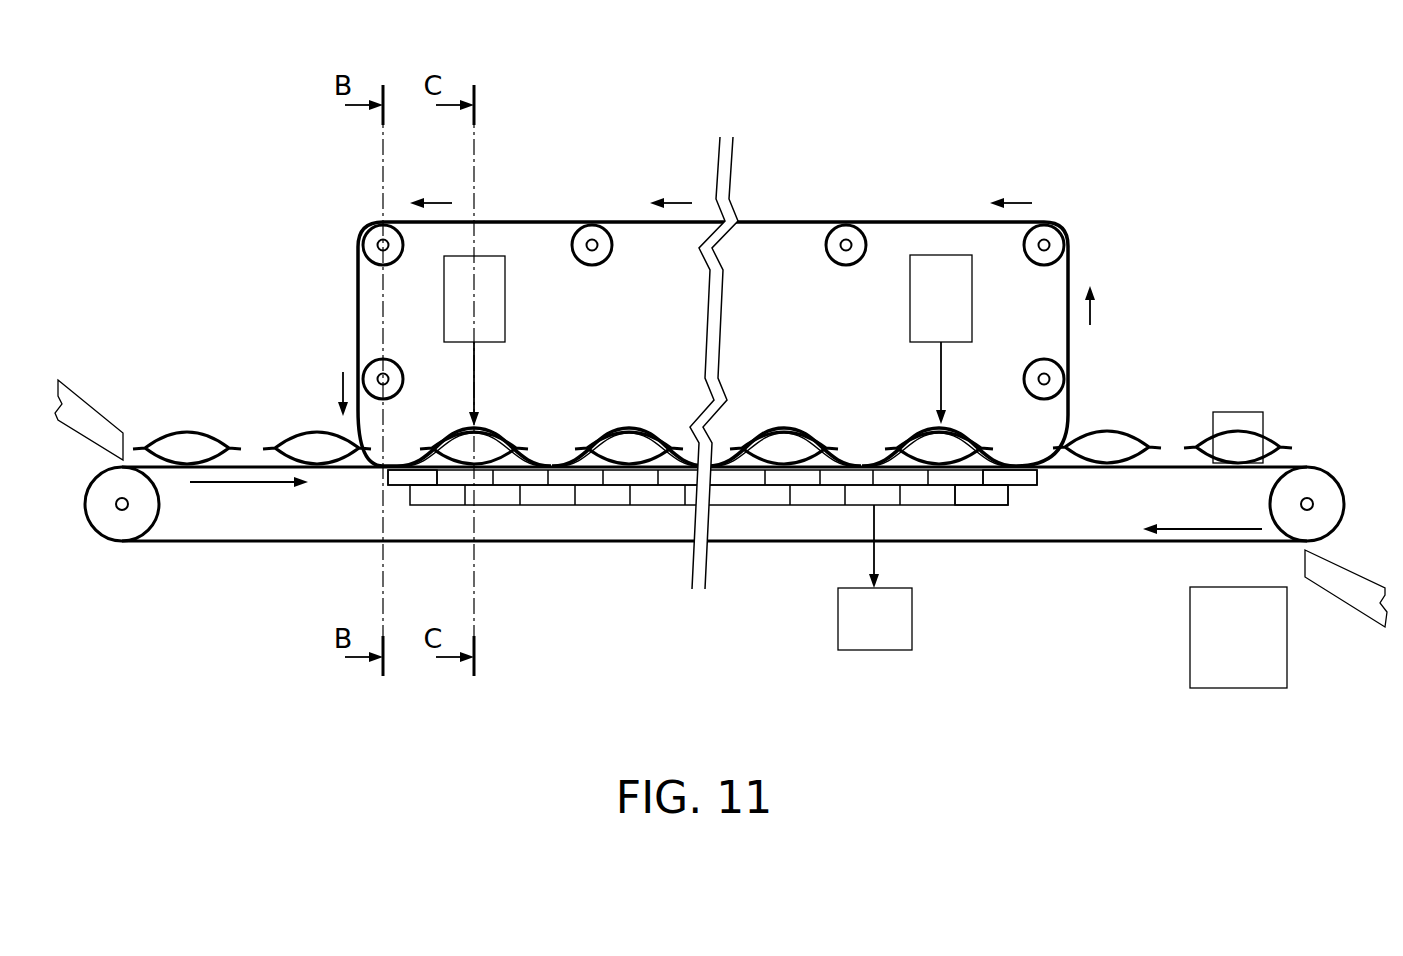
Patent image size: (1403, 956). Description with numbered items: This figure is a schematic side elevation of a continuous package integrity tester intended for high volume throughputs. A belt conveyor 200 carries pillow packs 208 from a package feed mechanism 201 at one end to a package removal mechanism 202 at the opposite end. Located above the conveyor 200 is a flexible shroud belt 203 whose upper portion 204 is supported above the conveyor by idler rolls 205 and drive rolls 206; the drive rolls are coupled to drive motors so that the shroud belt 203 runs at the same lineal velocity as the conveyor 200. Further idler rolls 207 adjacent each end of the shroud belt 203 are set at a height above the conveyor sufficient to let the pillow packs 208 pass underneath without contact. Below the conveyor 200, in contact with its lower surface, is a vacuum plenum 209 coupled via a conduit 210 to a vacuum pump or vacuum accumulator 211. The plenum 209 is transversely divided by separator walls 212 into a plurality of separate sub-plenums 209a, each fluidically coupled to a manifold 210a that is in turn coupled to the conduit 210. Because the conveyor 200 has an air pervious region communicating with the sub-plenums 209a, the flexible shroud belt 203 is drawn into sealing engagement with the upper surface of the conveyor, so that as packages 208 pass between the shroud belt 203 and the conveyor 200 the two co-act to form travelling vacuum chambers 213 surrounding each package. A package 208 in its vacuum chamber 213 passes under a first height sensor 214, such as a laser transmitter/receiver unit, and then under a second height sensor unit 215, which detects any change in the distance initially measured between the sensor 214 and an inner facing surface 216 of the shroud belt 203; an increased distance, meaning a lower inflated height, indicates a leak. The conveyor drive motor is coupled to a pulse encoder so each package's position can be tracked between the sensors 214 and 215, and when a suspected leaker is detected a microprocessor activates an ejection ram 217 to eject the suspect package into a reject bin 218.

The belt conveyor 200 is at (246, 466).
The package feed mechanism 201 is at (78, 410).
The package removal mechanism 202 is at (1335, 590).
The flexible shroud belt 203 is at (520, 438).
The upper portion 204 is at (548, 221).
The idler rolls 205 is at (601, 224).
The drive rolls 206 is at (363, 236).
The idler rolls 207 is at (358, 365).
The pillow packs 208 is at (190, 433).
The vacuum plenum 209 is at (1000, 486).
The sub-plenums 209a is at (1025, 477).
The conduit 210 is at (874, 556).
The manifold 210a is at (545, 508).
The vacuum pump, vacuum accumulator or the like 211 is at (875, 619).
The separator walls 212 is at (652, 478).
The travelling vacuum chambers 213 is at (433, 458).
The first height sensor 214 is at (474, 341).
The second height sensor unit 215 is at (941, 339).
The inner facing surface 216 is at (480, 425).
The ejection ram 217 is at (1240, 412).
The reject bin 218 is at (1238, 637).